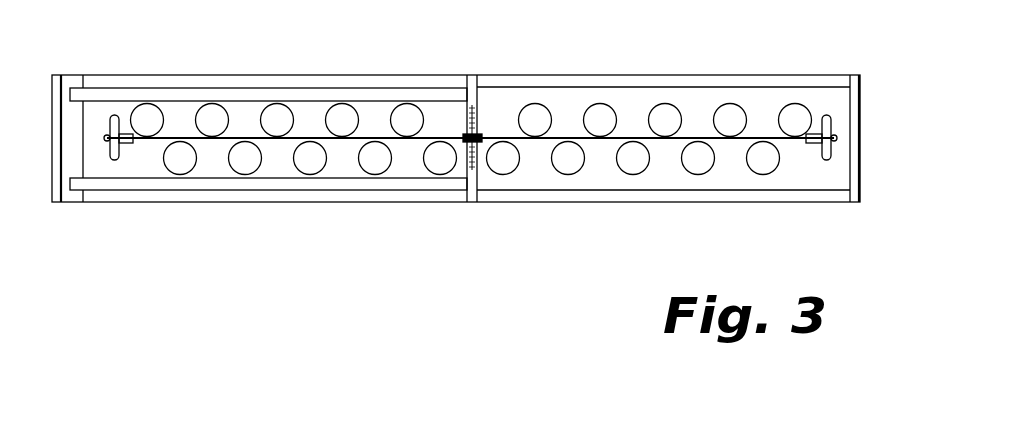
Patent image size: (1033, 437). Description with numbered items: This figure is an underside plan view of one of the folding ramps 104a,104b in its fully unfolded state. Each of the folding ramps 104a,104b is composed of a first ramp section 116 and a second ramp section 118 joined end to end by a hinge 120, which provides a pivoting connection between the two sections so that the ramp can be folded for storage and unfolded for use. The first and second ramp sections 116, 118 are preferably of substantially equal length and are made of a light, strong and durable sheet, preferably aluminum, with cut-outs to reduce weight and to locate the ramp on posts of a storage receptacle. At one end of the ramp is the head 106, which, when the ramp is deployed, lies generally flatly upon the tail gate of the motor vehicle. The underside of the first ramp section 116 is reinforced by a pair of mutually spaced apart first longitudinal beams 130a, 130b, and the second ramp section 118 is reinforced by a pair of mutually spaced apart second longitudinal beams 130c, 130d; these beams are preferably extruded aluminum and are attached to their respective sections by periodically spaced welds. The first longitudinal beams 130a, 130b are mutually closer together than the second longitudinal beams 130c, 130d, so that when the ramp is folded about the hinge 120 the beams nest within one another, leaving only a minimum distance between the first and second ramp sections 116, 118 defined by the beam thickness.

The folding ramps 104a,104b is at (306, 76).
The head 106 is at (73, 198).
The first ramp section 116 is at (342, 170).
The second ramp section 118 is at (543, 170).
The hinge 120 is at (471, 204).
The first longitudinal beam 130a is at (202, 187).
The first longitudinal beam 130b is at (169, 88).
The second longitudinal beam 130c is at (672, 203).
The second longitudinal beam 130d is at (606, 73).